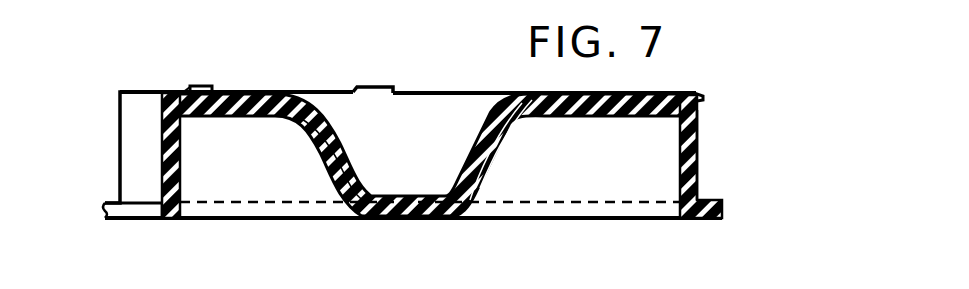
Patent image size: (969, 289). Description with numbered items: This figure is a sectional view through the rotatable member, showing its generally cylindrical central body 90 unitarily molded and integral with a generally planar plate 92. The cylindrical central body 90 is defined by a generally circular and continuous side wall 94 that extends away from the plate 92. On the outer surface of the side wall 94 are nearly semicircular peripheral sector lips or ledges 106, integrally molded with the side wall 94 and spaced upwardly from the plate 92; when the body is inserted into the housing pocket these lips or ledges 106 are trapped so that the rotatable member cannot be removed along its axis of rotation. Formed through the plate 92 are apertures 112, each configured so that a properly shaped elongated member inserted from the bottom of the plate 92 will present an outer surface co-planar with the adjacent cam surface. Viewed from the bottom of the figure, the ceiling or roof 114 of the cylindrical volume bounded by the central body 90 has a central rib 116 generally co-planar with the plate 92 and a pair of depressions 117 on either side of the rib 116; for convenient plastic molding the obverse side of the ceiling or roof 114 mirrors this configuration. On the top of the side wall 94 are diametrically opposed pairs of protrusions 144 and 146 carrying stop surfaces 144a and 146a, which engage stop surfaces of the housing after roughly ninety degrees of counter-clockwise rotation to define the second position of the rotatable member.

The plate 92 is at (133, 221).
The aperture 112 is at (150, 217).
The peripheral sector lip or ledge 106 is at (700, 98).
The stop surface 146a is at (187, 89).
The protrusion 146 is at (194, 86).
The cylindrical central body 90 is at (698, 147).
The side wall 94 is at (694, 177).
The protrusion 144 is at (394, 89).
The stop surface 144a is at (397, 86).
The ceiling or roof 114 is at (391, 192).
The central rib 116 is at (418, 213).
The depression 117 is at (247, 157).